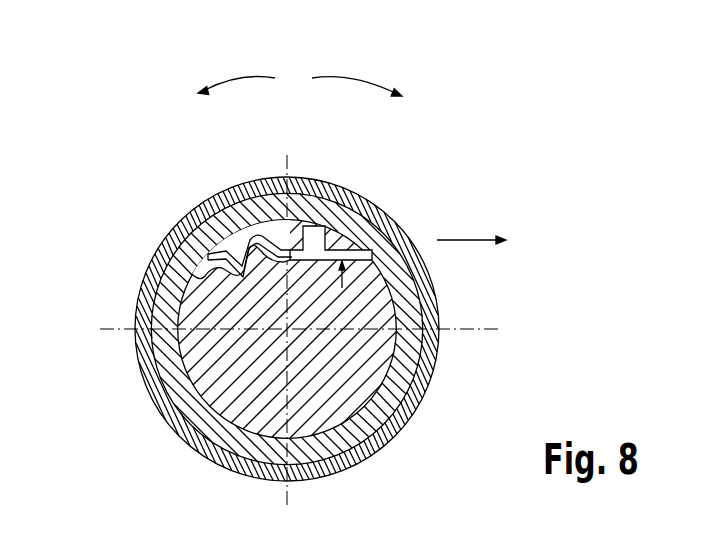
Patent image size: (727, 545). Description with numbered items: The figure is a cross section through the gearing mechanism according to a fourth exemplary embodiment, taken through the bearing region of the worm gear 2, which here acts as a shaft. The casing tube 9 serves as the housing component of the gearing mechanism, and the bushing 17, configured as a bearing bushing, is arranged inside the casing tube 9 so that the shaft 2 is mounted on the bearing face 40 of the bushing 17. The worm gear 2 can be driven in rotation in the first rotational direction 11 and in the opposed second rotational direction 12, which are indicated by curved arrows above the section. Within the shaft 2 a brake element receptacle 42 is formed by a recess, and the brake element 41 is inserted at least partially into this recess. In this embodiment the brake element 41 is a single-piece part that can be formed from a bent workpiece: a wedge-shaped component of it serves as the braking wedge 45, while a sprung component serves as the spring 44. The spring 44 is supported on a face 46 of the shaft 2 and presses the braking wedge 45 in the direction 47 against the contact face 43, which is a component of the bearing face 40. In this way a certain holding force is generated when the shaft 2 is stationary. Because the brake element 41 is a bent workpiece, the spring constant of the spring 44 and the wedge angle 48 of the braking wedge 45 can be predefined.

The worm gear 2 is at (205, 316).
The casing tube 9 is at (348, 460).
The first rotational direction 11 is at (355, 72).
The second rotational direction 12 is at (243, 72).
The bushing 17 is at (418, 306).
The bearing face 40 is at (200, 352).
The contact face 43 is at (217, 329).
The brake element 41 is at (240, 201).
The brake element receptacle 42 is at (213, 248).
The spring 44 is at (200, 268).
The braking wedge 45 is at (360, 226).
The face 46 is at (210, 258).
The direction 47 is at (470, 236).
The wedge angle 48 is at (348, 250).